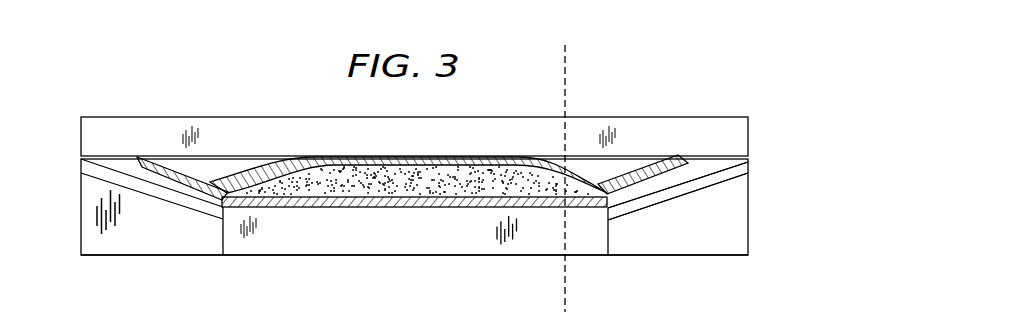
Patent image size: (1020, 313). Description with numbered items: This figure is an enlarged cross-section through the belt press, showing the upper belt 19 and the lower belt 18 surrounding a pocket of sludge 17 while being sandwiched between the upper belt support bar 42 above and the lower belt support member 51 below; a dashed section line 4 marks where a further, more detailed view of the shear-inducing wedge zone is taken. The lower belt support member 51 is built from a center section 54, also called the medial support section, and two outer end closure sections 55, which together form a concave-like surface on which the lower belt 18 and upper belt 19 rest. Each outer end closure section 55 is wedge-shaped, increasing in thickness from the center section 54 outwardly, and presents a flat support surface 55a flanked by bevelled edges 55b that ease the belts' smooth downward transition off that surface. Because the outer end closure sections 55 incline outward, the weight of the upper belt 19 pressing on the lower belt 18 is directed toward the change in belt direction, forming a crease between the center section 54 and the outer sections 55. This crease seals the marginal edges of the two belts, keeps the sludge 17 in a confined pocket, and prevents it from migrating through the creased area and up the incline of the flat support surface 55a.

The section line 4- 4 is at (565, 45).
The cover plate 42 is at (153, 109).
The upper belt 19 is at (263, 172).
The sludge 17 is at (458, 178).
The lower belt 18 is at (288, 205).
The center section 54 is at (430, 222).
The lower belt support member 51 is at (478, 266).
The outer end closure sections 55 is at (148, 228).
The flat support surface 55a is at (720, 170).
The bevelled edges 55b is at (732, 175).